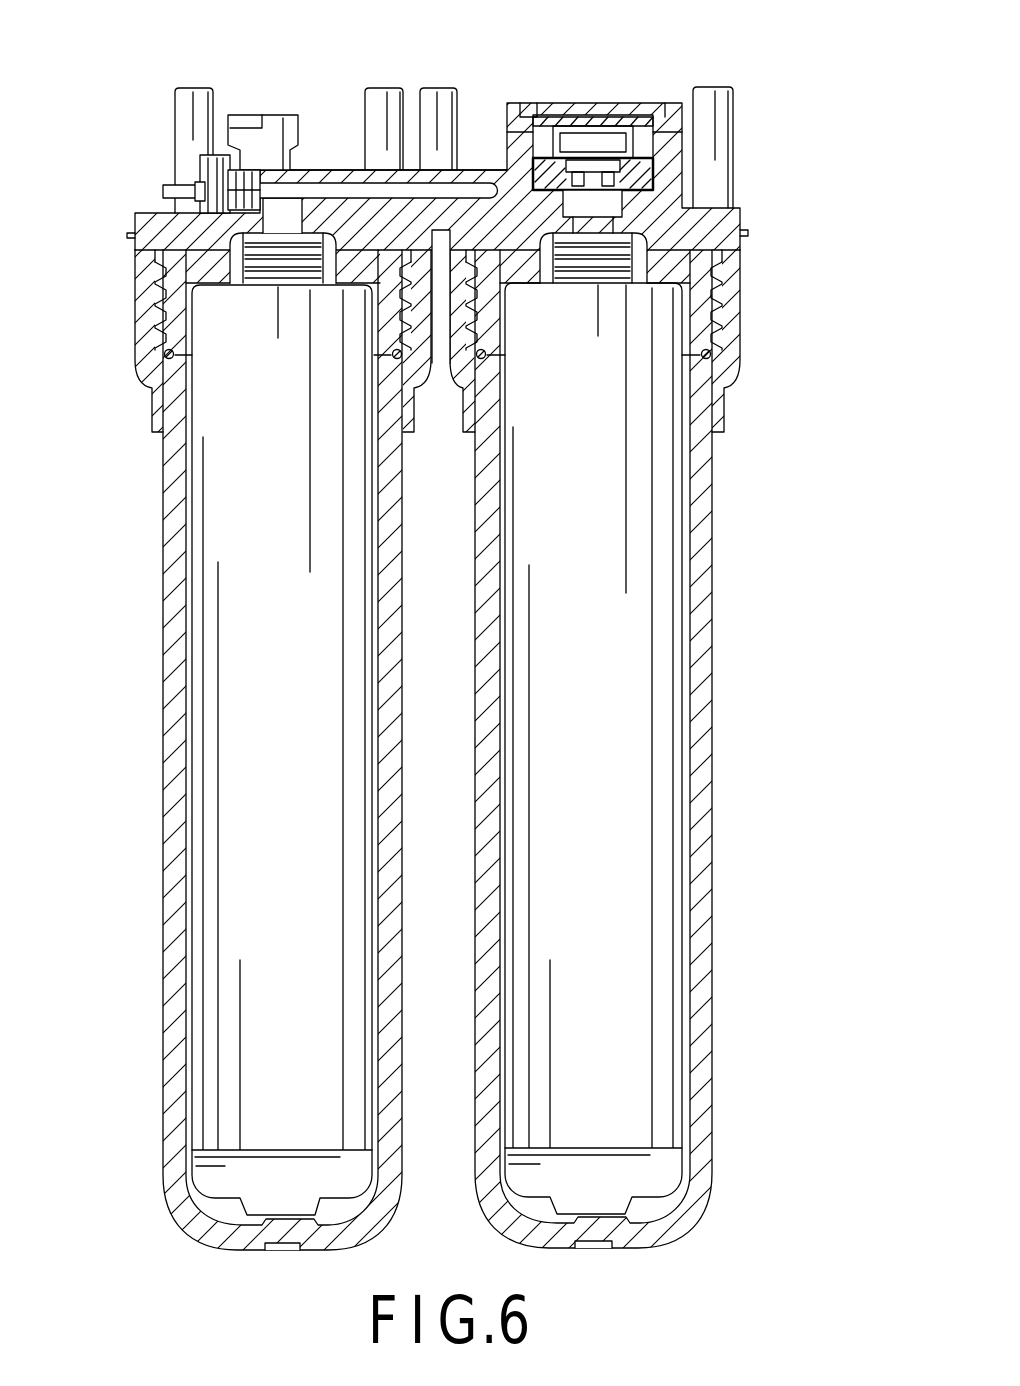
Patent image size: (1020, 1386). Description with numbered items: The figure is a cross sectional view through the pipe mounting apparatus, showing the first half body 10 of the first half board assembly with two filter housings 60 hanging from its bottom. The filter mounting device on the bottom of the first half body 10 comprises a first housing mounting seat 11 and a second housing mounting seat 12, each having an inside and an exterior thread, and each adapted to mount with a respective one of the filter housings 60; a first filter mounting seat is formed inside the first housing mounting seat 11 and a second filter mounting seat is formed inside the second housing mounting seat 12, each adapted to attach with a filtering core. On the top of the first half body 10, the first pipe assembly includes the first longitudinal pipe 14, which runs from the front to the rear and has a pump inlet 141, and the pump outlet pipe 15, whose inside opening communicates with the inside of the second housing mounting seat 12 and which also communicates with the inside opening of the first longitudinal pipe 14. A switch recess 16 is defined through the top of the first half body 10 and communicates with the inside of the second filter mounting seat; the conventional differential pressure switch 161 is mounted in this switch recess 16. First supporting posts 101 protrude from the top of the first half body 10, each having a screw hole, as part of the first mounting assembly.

The first half body 10 is at (727, 222).
The first supporting posts 101 is at (725, 106).
The first housing mounting seat 11 is at (150, 292).
The second housing mounting seat 12 is at (713, 318).
The first longitudinal pipe 14 is at (338, 166).
The pump inlet 141 is at (205, 150).
The pump outlet pipe 15 is at (488, 146).
The switch recess 16 is at (655, 142).
The differential pressure switch 161 is at (604, 84).
The filter housings 60 is at (167, 513).